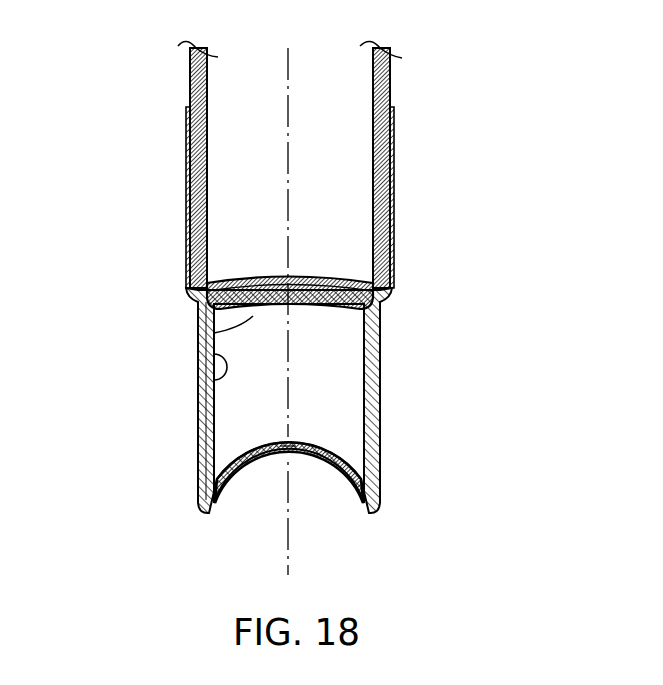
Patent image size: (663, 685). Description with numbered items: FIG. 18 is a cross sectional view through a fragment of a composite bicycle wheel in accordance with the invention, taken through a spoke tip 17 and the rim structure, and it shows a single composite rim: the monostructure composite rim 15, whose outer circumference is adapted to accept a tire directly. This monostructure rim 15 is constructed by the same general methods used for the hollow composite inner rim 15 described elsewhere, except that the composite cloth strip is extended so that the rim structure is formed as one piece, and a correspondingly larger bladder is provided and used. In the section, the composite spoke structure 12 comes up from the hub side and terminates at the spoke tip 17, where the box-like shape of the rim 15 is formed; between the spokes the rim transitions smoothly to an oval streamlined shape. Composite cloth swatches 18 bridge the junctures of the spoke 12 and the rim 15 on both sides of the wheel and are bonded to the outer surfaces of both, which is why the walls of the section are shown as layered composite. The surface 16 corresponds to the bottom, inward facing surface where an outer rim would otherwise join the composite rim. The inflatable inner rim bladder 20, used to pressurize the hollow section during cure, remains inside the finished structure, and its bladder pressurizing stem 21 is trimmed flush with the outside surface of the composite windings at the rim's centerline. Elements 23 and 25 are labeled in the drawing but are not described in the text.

The composite spoke structure 12 is at (380, 73).
The inner rim 15 is at (377, 447).
The bottom surface of outer rim 16 is at (327, 440).
The spoke tip 17 is at (242, 280).
The composite cloth swatch 18 is at (190, 205).
The inner rim bladder 20 is at (208, 387).
The bladder pressurizing stem 21 is at (283, 477).
The lip 23 is at (212, 331).
The inner surface of arm 25 is at (370, 88).